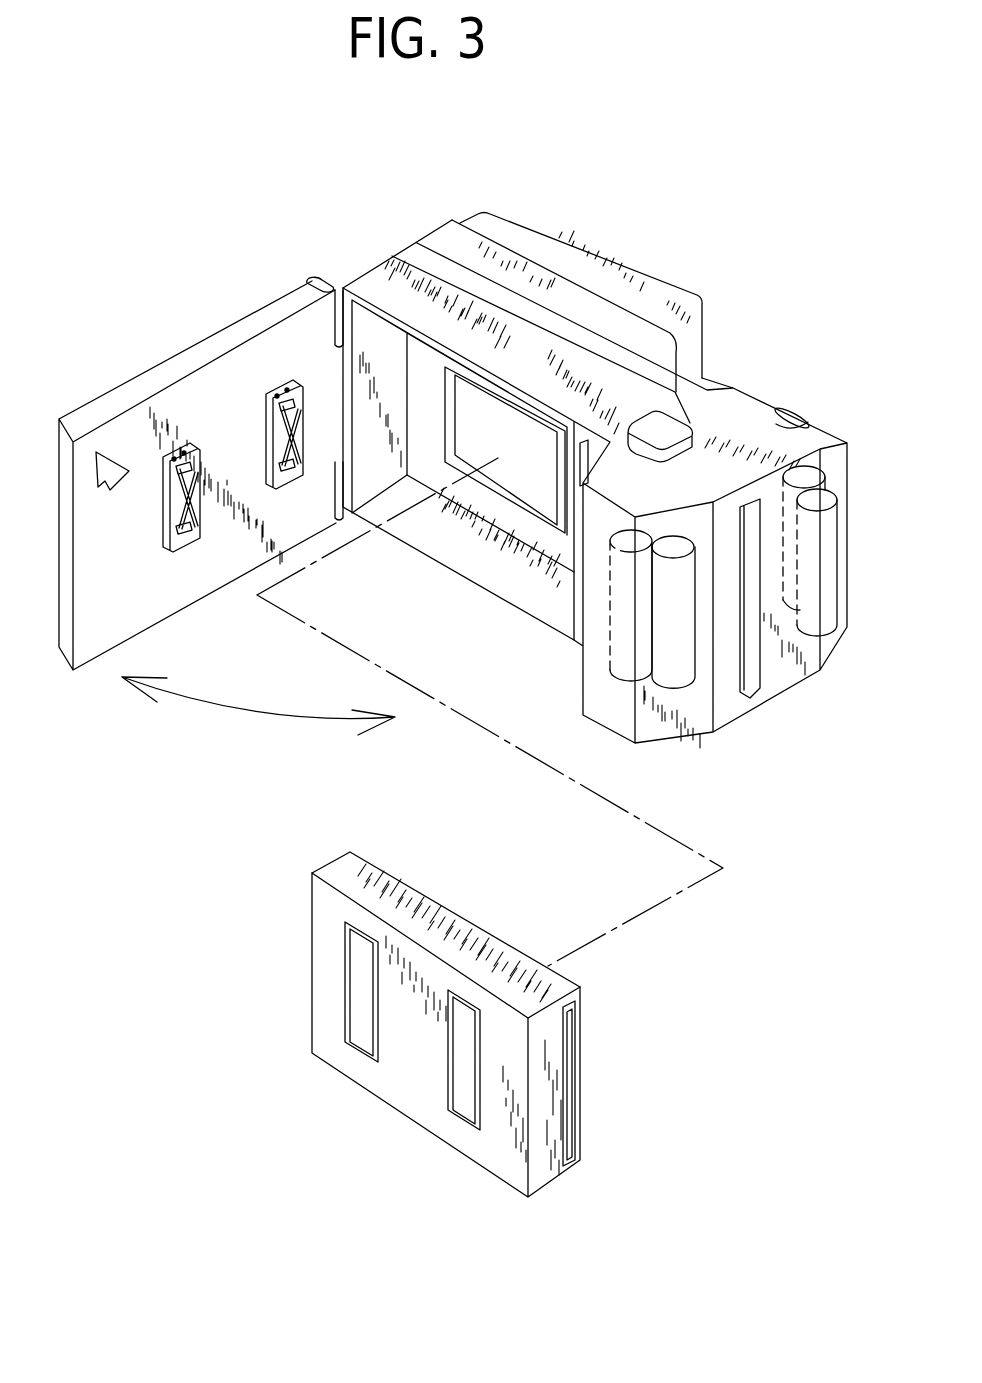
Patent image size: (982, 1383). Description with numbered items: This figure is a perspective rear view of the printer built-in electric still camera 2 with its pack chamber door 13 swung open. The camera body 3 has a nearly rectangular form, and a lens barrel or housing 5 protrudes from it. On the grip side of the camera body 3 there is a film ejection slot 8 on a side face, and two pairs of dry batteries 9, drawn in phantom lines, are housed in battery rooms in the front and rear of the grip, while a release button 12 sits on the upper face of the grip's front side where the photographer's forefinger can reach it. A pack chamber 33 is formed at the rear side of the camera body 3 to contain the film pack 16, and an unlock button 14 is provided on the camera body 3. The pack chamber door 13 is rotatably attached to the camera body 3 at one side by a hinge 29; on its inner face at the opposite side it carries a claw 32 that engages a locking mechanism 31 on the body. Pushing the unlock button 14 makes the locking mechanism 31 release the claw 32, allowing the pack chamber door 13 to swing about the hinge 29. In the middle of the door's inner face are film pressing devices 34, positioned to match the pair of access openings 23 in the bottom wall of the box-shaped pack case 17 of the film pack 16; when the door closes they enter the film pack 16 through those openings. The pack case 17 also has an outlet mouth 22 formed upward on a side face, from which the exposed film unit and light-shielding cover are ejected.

The printer built-in electric still camera 2 is at (468, 196).
The camera body 3 is at (356, 262).
The lens barrel or housing 5 is at (650, 292).
The film ejection slot 8 is at (750, 698).
The dry batteries 9 is at (832, 615).
The release button 12 is at (801, 411).
The pack chamber door 13 is at (116, 378).
The unlock button 14 is at (662, 425).
The film pack 16 is at (405, 1127).
The pack case 17 is at (470, 944).
The outlet mouth 22 is at (573, 1053).
The access openings 23 is at (447, 1031).
The hinge 29 is at (318, 283).
The locking mechanism 31 is at (584, 457).
The claw 32 is at (118, 486).
The pack chamber 33 is at (505, 525).
The film pressing devices 34 is at (195, 554).